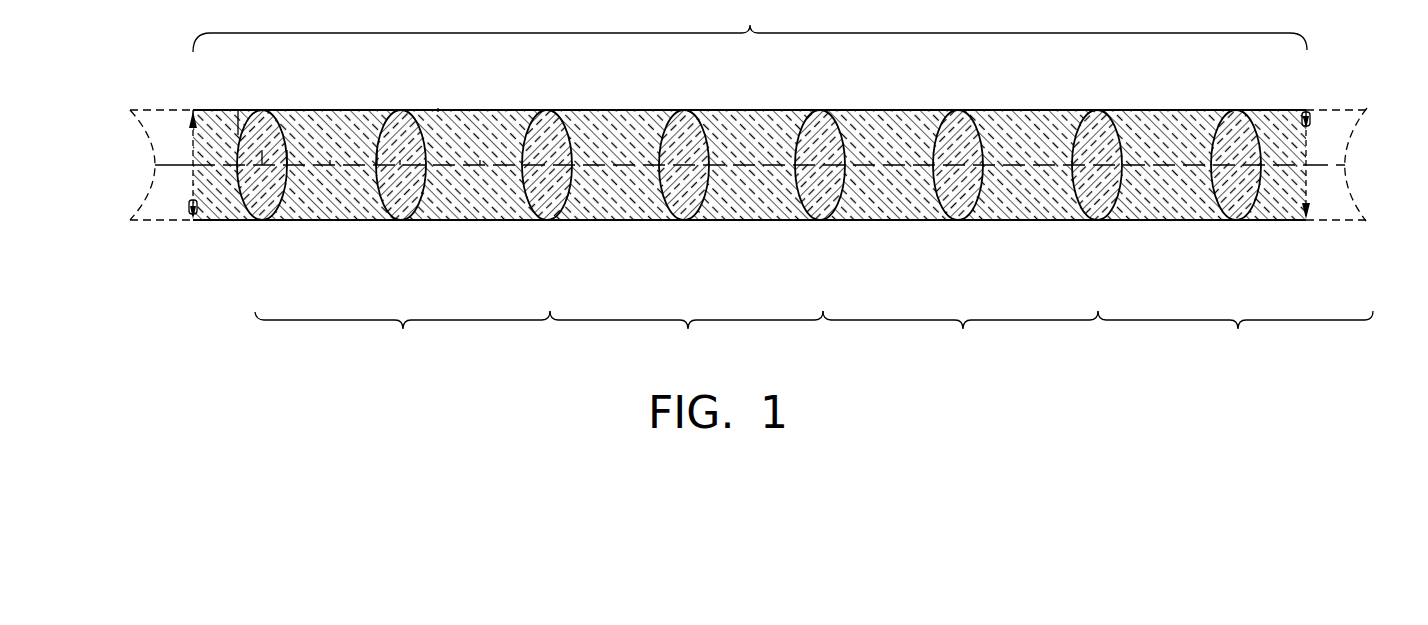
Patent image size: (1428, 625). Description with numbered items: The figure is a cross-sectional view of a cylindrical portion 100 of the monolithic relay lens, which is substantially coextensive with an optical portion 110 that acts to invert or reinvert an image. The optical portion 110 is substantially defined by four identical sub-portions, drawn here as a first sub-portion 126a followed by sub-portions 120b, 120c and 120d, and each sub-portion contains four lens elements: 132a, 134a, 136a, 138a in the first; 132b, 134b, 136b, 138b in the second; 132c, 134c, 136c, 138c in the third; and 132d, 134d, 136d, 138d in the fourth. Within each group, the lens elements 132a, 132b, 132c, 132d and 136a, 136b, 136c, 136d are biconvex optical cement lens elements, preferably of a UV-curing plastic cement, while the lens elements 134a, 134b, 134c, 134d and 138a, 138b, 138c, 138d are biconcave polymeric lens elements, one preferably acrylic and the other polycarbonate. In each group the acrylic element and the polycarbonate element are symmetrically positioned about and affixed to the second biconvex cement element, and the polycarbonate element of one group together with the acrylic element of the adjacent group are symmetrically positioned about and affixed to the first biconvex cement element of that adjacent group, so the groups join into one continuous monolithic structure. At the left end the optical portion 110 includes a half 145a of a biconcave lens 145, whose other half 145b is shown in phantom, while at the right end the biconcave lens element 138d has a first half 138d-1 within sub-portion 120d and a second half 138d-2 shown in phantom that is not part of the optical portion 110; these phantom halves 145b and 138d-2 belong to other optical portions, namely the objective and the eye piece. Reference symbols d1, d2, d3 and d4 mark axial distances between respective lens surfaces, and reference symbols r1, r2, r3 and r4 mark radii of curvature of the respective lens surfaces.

The portion 100 is at (519, 26).
The optical portion 110 is at (750, 110).
The first segment 126a is at (402, 335).
The sub-portion 120b is at (686, 335).
The sub-portion 120c is at (960, 333).
The sub-portion 120d is at (1235, 333).
The lens element 132a is at (267, 215).
The lens element 134a is at (310, 222).
The lens element 136a is at (400, 222).
The lens element 138a is at (455, 212).
The lens element 132b is at (544, 208).
The lens element 134b is at (614, 222).
The lens element 136b is at (680, 220).
The lens element 138b is at (762, 220).
The lens element 132c is at (818, 220).
The lens element 134c is at (878, 212).
The lens element 136c is at (942, 215).
The lens element 138c is at (1040, 220).
The lens element 132d is at (1085, 218).
The lens element 134d is at (1163, 212).
The lens element 136d is at (1245, 212).
The biconcave lens element 138d is at (1296, 254).
The first part of end portion d 138d-1 is at (1265, 108).
The second half of biconcave lens element 138d-2 is at (1320, 108).
The biconcave lens 145 is at (203, 82).
The half of biconcave lens 145a is at (218, 222).
The other half of biconcave lens 145b is at (172, 108).
The radius of curvature r1 is at (242, 135).
The radius of curvature r2 is at (287, 150).
The radius of curvature r3 is at (377, 150).
The radius of curvature r4 is at (438, 108).
The axial distance d1 is at (262, 155).
The axial distance d2 is at (330, 165).
The axial distance d3 is at (400, 165).
The axial distance d4 is at (480, 165).